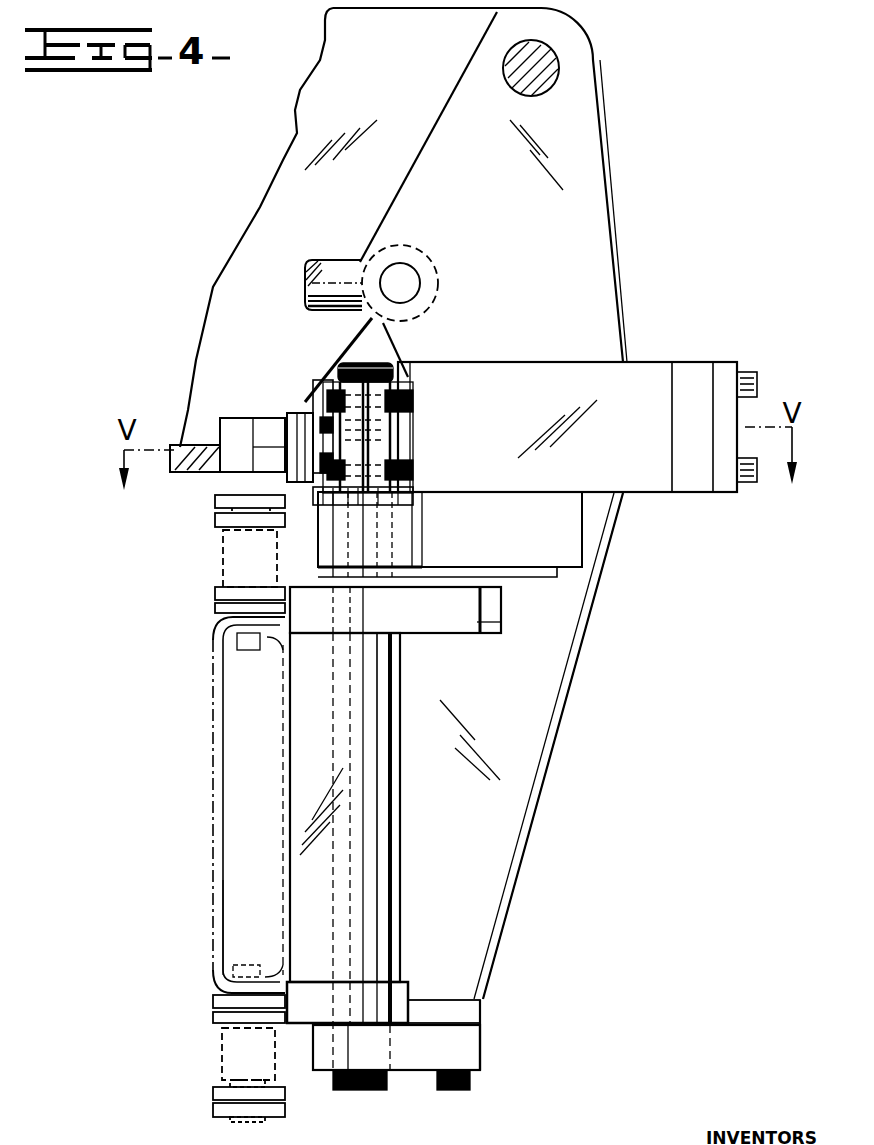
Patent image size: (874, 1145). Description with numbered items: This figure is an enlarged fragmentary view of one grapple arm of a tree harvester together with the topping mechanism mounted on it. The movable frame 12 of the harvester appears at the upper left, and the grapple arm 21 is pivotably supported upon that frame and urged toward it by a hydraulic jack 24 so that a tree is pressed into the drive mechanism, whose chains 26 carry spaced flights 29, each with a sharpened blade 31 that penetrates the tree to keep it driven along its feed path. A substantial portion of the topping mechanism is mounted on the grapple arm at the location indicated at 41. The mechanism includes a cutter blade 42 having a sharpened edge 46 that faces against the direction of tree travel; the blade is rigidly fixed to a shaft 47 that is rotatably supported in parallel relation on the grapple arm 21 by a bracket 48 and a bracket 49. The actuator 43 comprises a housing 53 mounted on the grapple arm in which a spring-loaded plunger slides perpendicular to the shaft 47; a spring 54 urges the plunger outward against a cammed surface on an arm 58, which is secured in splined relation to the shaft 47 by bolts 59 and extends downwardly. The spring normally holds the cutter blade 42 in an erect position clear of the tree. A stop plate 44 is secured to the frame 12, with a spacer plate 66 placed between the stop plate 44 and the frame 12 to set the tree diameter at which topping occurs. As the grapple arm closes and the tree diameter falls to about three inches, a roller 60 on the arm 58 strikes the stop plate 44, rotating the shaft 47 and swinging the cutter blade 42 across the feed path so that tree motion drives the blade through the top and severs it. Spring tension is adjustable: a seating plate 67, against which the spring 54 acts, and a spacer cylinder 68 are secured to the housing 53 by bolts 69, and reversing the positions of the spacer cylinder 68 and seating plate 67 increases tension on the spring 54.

The movable frame 12 is at (300, 133).
The hydraulic jack 24 is at (337, 232).
The actuator 43 is at (473, 345).
The shaft 47 is at (360, 373).
The housing 53 is at (582, 375).
The spacer cylinder 68 is at (688, 370).
The seating plate 67 is at (722, 372).
The bolts 69 is at (757, 374).
The spacer plate 66 is at (263, 430).
The stop plate 44 is at (307, 402).
The roller 60 is at (320, 377).
The bolts 59 is at (413, 385).
The arm 58 is at (417, 433).
The bracket 49 is at (563, 548).
The chains 26 is at (237, 572).
The spring 54 is at (462, 623).
The sharpened edge 46 is at (292, 743).
The cutter blade 42 is at (357, 867).
The flights 29 is at (217, 810).
The sharpened blade 31 is at (240, 873).
The topping mechanism mounting location 41 is at (460, 898).
The grapple arm 21 is at (470, 968).
The bracket 48 is at (464, 1058).